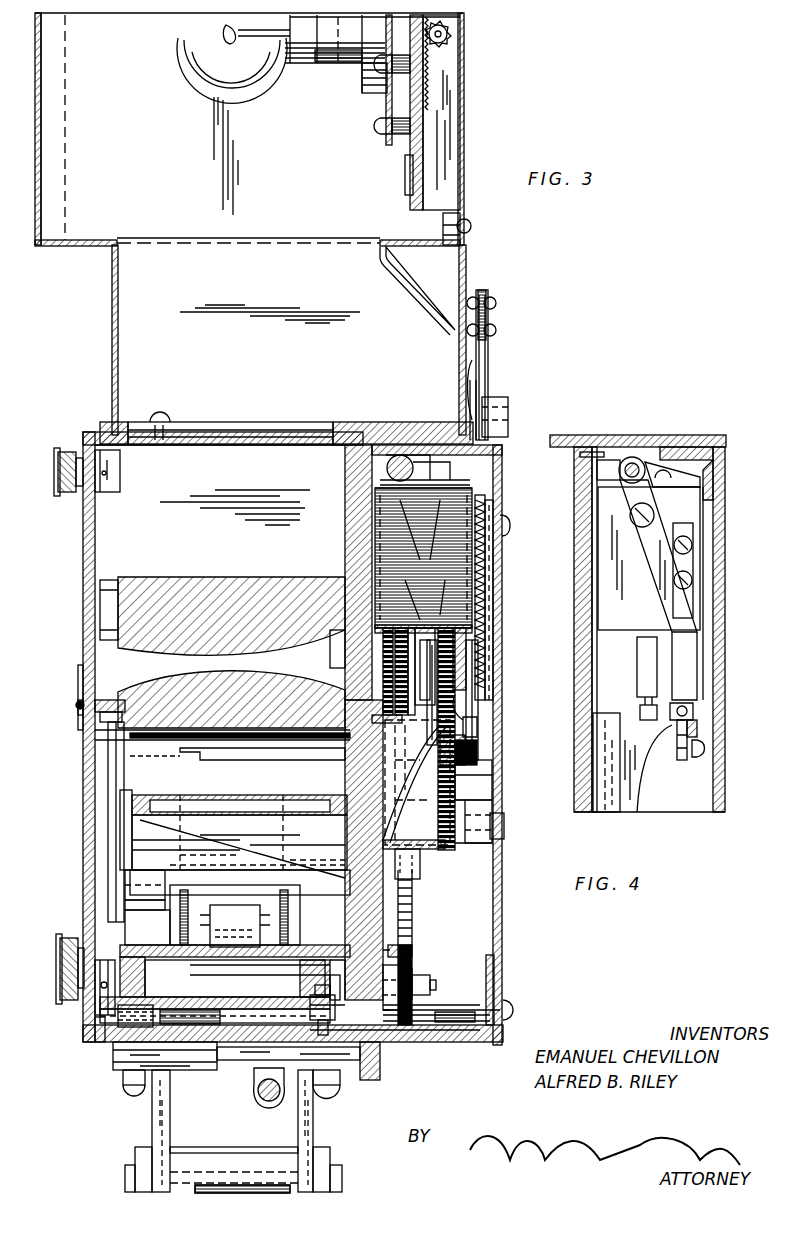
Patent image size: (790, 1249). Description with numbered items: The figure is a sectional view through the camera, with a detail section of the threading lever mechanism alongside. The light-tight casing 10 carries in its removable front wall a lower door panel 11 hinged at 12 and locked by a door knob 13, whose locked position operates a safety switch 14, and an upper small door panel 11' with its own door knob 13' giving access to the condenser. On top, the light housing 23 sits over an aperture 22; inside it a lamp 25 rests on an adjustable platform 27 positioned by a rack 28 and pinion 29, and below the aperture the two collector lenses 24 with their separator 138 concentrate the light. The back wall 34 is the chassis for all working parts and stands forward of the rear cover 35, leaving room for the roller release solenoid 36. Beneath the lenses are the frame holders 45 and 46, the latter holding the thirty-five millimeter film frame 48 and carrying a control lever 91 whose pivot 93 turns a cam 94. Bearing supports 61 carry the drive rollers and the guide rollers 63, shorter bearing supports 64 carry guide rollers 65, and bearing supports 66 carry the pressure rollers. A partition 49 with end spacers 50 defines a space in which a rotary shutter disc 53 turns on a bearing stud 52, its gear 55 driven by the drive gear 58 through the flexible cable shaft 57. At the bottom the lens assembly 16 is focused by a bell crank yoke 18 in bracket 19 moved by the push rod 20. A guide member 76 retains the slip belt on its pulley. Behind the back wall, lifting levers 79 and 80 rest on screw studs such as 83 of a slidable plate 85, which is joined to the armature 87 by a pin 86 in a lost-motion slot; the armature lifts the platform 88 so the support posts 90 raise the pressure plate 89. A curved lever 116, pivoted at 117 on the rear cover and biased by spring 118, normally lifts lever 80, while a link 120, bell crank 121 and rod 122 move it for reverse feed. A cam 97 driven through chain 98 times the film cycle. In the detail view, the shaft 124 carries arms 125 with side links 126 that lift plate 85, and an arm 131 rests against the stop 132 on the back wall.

In FIG. 3, the light-tight casing 10 is at (490, 432).
In FIG. 3, the door panel 11 is at (265, 737).
In FIG. 3, the small door panel 11' is at (190, 508).
In FIG. 3, the hinge 12 is at (72, 705).
In FIG. 3, the door knob 13 is at (71, 960).
In FIG. 3, the door knob 13' is at (76, 457).
In FIG. 3, the safety switch 14 is at (192, 1012).
In FIG. 3, the lens assembly 16 is at (127, 1116).
In FIG. 3, the bell crank yoke 18 is at (135, 1160).
In FIG. 3, the bracket 19 is at (170, 1120).
In FIG. 3, the push rod 20 is at (470, 268).
In FIG. 3, the aperture 22 is at (320, 440).
In FIG. 3, the light housing 23 is at (470, 240).
In FIG. 3, the collector lens 24 is at (168, 675).
In FIG. 3, the lamp 25 is at (192, 78).
In FIG. 3, the adjustable platform 27 is at (420, 135).
In FIG. 3, the rack 28 is at (412, 68).
In FIG. 3, the pinion 29 is at (450, 35).
In FIG. 3, the back wall 34 is at (368, 478).
In FIG. 4, the back wall 34 is at (592, 684).
In FIG. 3, the rear cover 35 is at (500, 885).
In FIG. 4, the rear cover 35 is at (718, 595).
In FIG. 3, the roller release solenoid 36 is at (465, 550).
In FIG. 3, the frame holder 45 is at (175, 834).
In FIG. 3, the frame holder 46 is at (150, 975).
In FIG. 3, the film frame 48 is at (190, 970).
In FIG. 3, the partition 49 is at (98, 1010).
In FIG. 3, the end spacers 50 is at (500, 1010).
In FIG. 3, the bearing stud 52 is at (330, 1048).
In FIG. 3, the rotary shutter disc 53 is at (460, 1040).
In FIG. 3, the gear 55 is at (312, 1000).
In FIG. 3, the flexible cable shaft 57 is at (405, 922).
In FIG. 3, the drive gear 58 is at (445, 1010).
In FIG. 3, the bearing supports 61 is at (120, 830).
In FIG. 3, the guide rollers 63 is at (140, 838).
In FIG. 3, the bearing supports 64 is at (135, 930).
In FIG. 3, the guide rollers 65 is at (170, 912).
In FIG. 3, the bearing supports 66 is at (118, 755).
In FIG. 3, the guide member 76 is at (412, 880).
In FIG. 4, the lifting lever 79 is at (698, 735).
In FIG. 3, the lifting lever 80 is at (478, 750).
In FIG. 4, the screw stud 83 is at (700, 757).
In FIG. 3, the slidable plate 85 is at (455, 700).
In FIG. 4, the slidable plate 85 is at (680, 758).
In FIG. 3, the pin 86 is at (478, 720).
In FIG. 3, the armature 87 is at (478, 672).
In FIG. 4, the armature 87 is at (637, 658).
In FIG. 3, the pressure plate support platform 88 is at (416, 782).
In FIG. 4, the pressure plate support platform 88 is at (620, 788).
In FIG. 3, the pressure plate 89 is at (240, 908).
In FIG. 3, the support posts 90 is at (195, 752).
In FIG. 3, the control lever 91 is at (320, 983).
In FIG. 3, the pivot 93 is at (438, 978).
In FIG. 3, the cam 94 is at (425, 975).
In FIG. 3, the cam 97 is at (440, 848).
In FIG. 3, the chain 98 is at (473, 816).
In FIG. 3, the curved lever 116 is at (480, 790).
In FIG. 3, the pivot 117 is at (500, 825).
In FIG. 3, the spring 118 is at (490, 600).
In FIG. 3, the link 120 is at (490, 312).
In FIG. 3, the bell crank 121 is at (485, 355).
In FIG. 3, the rod 122 is at (470, 382).
In FIG. 4, the shaft 124 is at (647, 465).
In FIG. 4, the arms 125 is at (645, 497).
In FIG. 4, the side links 126 is at (650, 592).
In FIG. 4, the arm 131 is at (630, 455).
In FIG. 4, the stop 132 is at (600, 454).
In FIG. 3, the separator 138 is at (335, 658).